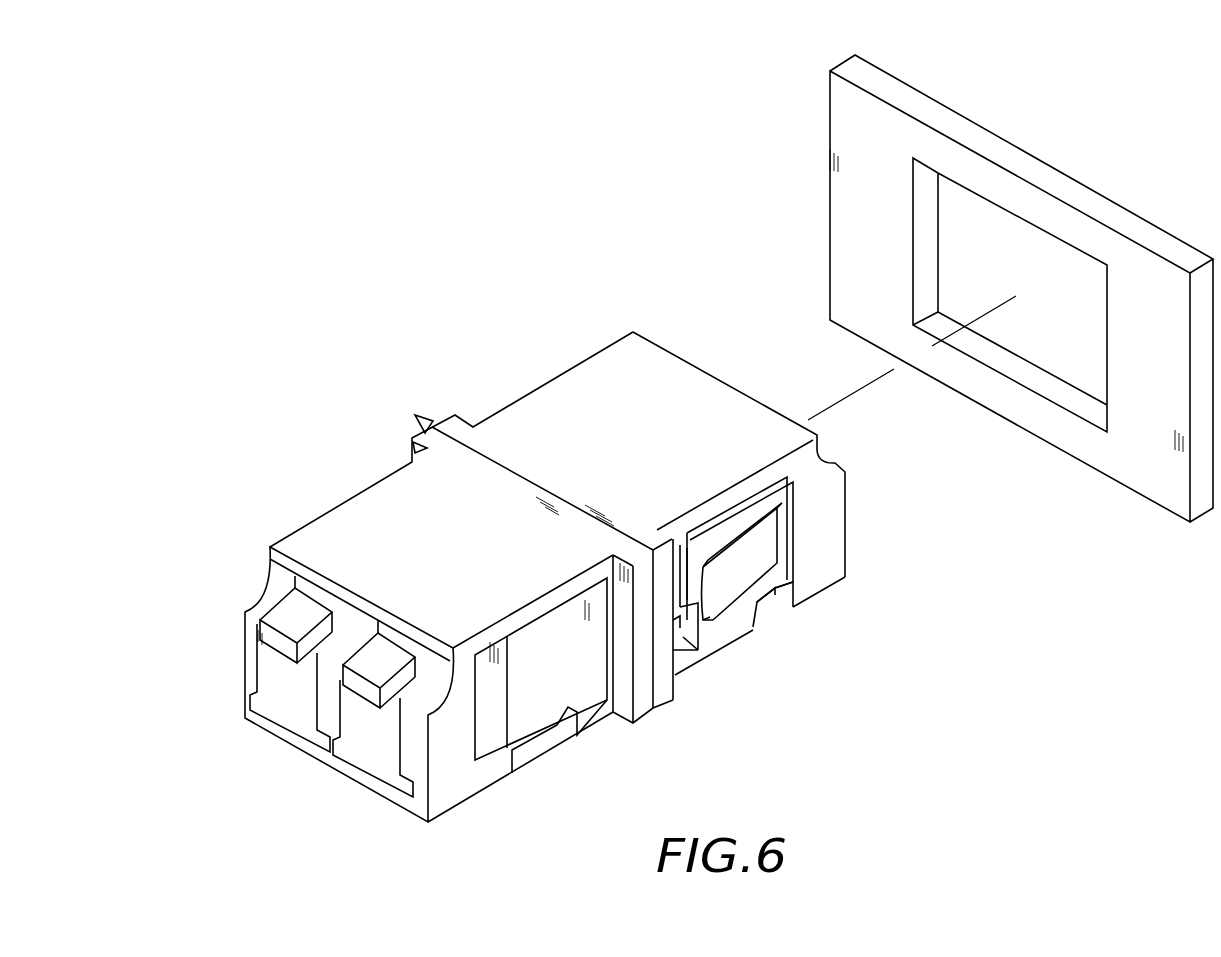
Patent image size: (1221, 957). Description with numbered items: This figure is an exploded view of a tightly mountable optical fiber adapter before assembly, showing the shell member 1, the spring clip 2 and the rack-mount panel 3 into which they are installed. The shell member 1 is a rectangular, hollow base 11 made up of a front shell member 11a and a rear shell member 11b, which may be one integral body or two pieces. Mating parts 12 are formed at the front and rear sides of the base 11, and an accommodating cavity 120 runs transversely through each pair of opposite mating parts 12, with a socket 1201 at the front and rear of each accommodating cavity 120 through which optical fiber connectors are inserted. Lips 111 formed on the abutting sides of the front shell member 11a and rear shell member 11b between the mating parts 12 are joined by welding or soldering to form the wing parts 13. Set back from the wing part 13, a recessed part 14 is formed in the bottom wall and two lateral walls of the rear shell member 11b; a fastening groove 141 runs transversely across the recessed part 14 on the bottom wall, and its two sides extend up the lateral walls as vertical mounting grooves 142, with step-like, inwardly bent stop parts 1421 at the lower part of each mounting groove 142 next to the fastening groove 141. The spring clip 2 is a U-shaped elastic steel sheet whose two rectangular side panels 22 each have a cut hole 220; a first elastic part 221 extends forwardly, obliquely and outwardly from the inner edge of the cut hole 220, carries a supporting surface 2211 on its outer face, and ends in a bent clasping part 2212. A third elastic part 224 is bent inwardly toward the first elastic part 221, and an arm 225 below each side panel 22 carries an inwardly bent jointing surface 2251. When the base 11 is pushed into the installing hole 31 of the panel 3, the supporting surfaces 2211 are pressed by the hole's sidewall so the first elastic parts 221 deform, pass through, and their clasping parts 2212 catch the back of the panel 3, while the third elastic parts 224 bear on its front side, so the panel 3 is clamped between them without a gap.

The shell member 1 is at (156, 631).
The base 11 is at (285, 509).
The front shell member 11a is at (392, 490).
The rear shell member 11b is at (562, 385).
The lip 111 is at (398, 421).
The mating part 12 is at (249, 642).
The accommodating cavity 120 is at (303, 703).
The socket 1201 is at (273, 670).
The wing part 13 is at (361, 379).
The recessed part 14 is at (765, 692).
The fastening groove 141 is at (757, 625).
The mounting groove 142 is at (800, 566).
The stop part 1421 is at (795, 585).
The spring clip 2 is at (905, 478).
The side panel 22 is at (787, 495).
The cut hole 220 is at (775, 515).
The first elastic part 221 is at (783, 529).
The supporting surface 2211 is at (760, 548).
The clasping part 2212 is at (710, 617).
The third elastic part 224 is at (676, 625).
The arm 225 is at (768, 623).
The jointing surface 2251 is at (783, 593).
The panel 3 is at (1130, 468).
The installing hole 31 is at (1060, 393).